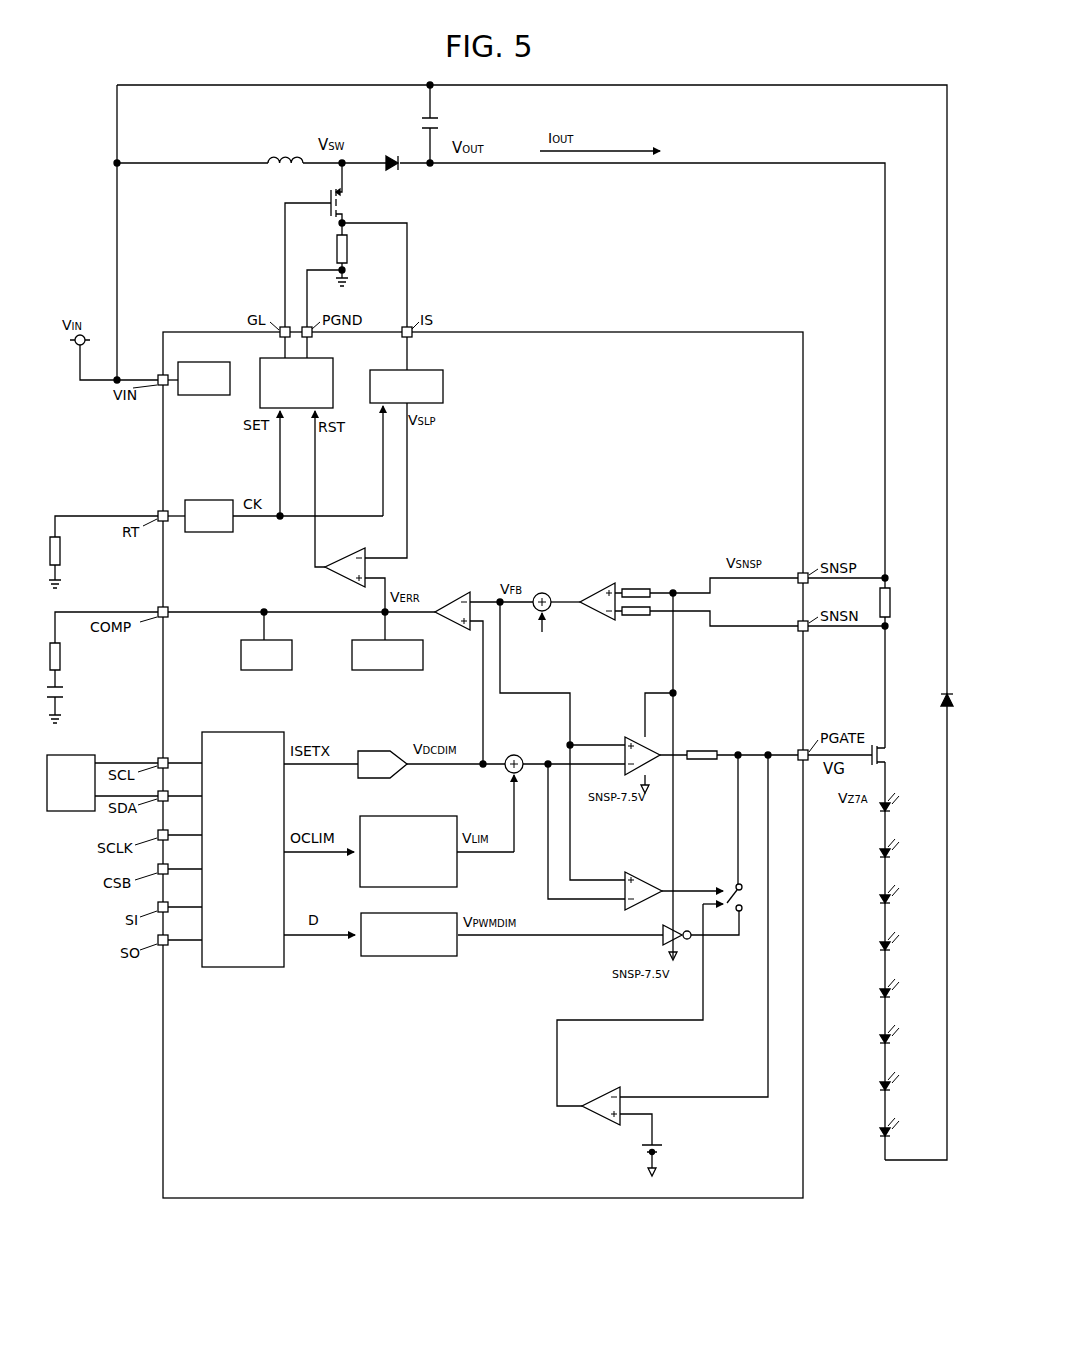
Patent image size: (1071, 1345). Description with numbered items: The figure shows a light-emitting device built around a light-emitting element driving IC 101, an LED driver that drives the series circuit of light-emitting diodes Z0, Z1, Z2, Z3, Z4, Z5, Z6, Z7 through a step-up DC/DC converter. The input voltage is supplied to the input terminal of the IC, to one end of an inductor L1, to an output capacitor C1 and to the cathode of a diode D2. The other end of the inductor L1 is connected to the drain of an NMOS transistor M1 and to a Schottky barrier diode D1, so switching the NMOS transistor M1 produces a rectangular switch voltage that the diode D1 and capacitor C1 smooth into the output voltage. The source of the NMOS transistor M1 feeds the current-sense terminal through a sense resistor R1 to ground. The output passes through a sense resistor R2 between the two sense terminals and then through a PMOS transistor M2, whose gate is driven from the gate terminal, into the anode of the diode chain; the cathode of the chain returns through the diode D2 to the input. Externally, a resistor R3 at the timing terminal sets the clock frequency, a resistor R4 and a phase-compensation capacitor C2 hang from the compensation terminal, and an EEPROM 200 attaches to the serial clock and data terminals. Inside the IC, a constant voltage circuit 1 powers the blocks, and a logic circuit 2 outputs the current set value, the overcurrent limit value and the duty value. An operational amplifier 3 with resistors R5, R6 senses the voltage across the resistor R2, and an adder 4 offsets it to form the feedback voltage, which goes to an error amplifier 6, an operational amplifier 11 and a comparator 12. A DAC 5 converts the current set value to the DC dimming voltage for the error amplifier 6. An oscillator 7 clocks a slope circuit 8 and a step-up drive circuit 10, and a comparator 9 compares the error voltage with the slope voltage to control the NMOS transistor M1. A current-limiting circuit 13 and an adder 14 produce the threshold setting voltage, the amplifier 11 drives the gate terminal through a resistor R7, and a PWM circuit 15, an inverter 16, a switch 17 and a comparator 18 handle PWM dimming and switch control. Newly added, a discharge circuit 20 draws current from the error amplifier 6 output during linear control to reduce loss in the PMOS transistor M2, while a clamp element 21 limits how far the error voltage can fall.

The constant voltage circuit 1 is at (204, 362).
The logic circuit 2 is at (243, 732).
The operational amplifier 3 is at (606, 584).
The adder 4 is at (541, 593).
The DAC 5 is at (374, 751).
The error amplifier 6 is at (462, 597).
The oscillator 7 is at (209, 500).
The slope circuit 8 is at (443, 390).
The comparator 9 is at (350, 556).
The step-up drive circuit 10 is at (333, 386).
The operational amplifier 11 is at (638, 737).
The comparator 12 is at (641, 877).
The current-limiting circuit 13 is at (409, 816).
The adder 14 is at (514, 755).
The PWM circuit 15 is at (409, 956).
The inverter 16 is at (668, 924).
The switch 17 is at (732, 884).
The comparator 18 is at (612, 1094).
The discharge circuit 20 is at (423, 657).
The clamp element 21 is at (292, 657).
The light-emitting element driving IC 101 is at (653, 332).
The EEPROM 200 is at (68, 755).
The inductor L1 is at (288, 157).
The output capacitor C1 is at (440, 122).
The Schottky barrier diode D1 is at (394, 156).
The NMOS transistor M1 is at (345, 201).
The sense resistor R1 is at (347, 250).
The sense resistor R2 is at (891, 605).
The resistor R3 is at (60, 552).
The resistor R4 is at (60, 658).
The capacitor C2 is at (62, 691).
The resistor R5 is at (636, 589).
The resistor R6 is at (636, 616).
The resistor R7 is at (703, 751).
The PMOS transistor M2 is at (890, 758).
The diode D2 is at (940, 700).
The light-emitting diode Z0 is at (893, 1137).
The light-emitting diode Z1 is at (893, 1091).
The light-emitting diode Z2 is at (893, 1044).
The light-emitting diode Z3 is at (893, 998).
The light-emitting diode Z4 is at (893, 951).
The light-emitting diode Z5 is at (893, 904).
The light-emitting diode Z6 is at (893, 858).
The light-emitting diode Z7 is at (893, 812).